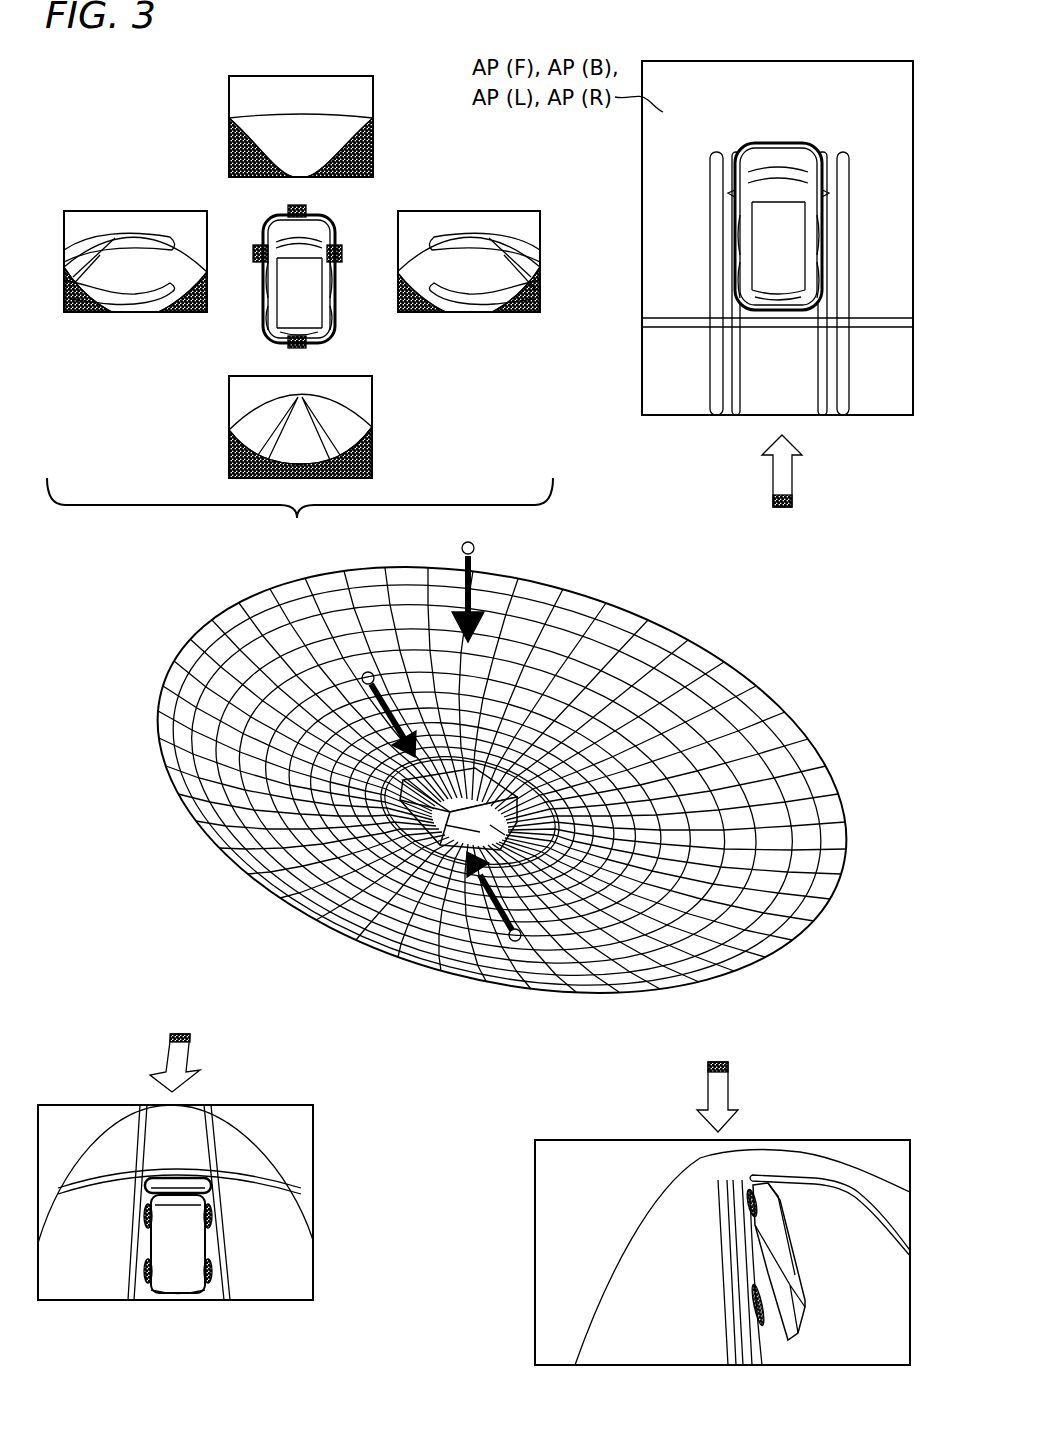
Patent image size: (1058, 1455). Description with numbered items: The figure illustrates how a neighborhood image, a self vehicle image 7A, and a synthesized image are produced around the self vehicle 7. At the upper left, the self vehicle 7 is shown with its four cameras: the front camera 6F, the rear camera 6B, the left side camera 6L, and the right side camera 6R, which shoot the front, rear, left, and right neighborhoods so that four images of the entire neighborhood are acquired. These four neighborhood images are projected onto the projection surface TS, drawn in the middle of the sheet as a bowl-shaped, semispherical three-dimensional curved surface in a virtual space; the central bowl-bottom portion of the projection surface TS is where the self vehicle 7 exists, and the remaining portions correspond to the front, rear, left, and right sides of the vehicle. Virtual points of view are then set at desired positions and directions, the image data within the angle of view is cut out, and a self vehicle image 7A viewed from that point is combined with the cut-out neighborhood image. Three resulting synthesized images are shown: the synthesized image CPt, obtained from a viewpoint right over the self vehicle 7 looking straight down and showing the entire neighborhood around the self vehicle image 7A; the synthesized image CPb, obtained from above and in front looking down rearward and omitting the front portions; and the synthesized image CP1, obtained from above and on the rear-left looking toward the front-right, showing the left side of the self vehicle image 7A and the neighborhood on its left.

The front camera 6F is at (306, 209).
The rear camera 6B is at (288, 345).
The left side camera 6L is at (255, 247).
The right side camera 6R is at (340, 263).
The self vehicle 7 is at (300, 283).
The self vehicle image 7A is at (775, 232).
The projection surface TS is at (653, 618).
The synthesized image CPt is at (882, 415).
The synthesized image CPb is at (60, 1300).
The synthesized image CP1 is at (878, 1140).